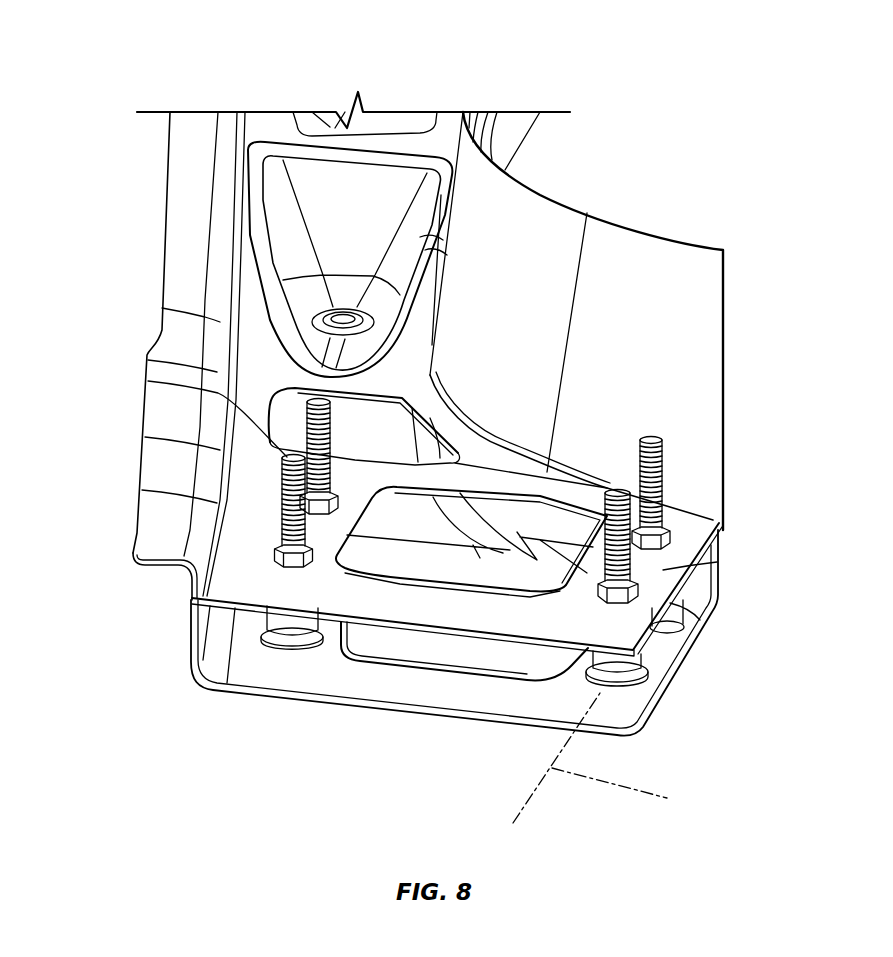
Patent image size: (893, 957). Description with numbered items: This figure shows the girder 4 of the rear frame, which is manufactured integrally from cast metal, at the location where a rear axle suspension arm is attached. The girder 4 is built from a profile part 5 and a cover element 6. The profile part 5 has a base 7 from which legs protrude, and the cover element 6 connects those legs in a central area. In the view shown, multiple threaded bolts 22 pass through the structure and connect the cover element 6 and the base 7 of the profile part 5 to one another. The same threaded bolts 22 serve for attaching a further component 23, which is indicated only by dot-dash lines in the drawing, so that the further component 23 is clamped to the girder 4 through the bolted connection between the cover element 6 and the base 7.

The girder 4 is at (110, 56).
The profile part 5 is at (180, 589).
The cover element 6 is at (363, 603).
The base 7 is at (403, 695).
The threaded bolts 22 is at (283, 514).
The further component 23 is at (630, 789).